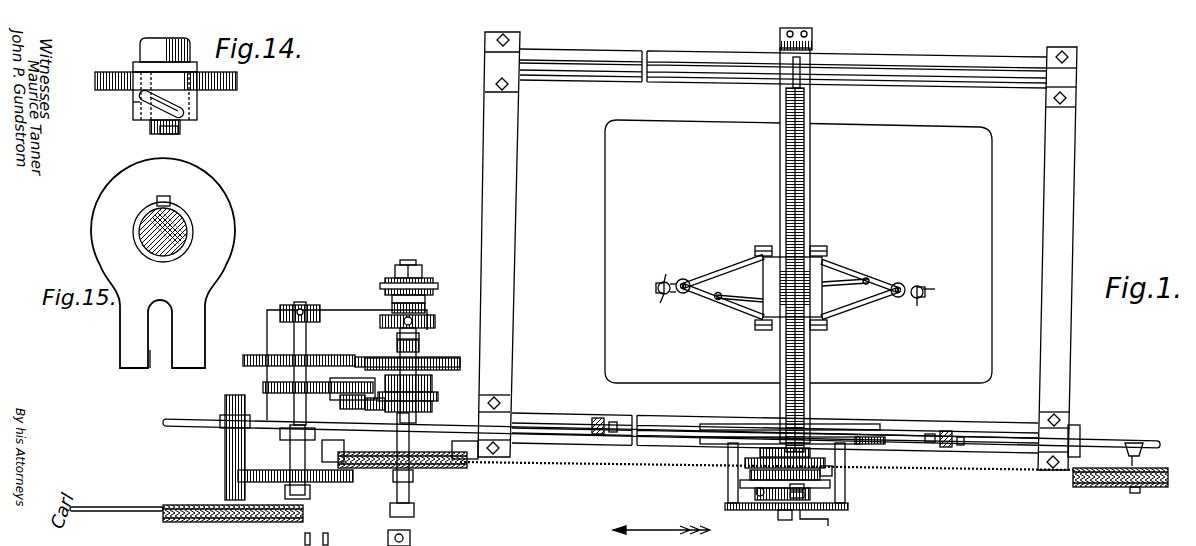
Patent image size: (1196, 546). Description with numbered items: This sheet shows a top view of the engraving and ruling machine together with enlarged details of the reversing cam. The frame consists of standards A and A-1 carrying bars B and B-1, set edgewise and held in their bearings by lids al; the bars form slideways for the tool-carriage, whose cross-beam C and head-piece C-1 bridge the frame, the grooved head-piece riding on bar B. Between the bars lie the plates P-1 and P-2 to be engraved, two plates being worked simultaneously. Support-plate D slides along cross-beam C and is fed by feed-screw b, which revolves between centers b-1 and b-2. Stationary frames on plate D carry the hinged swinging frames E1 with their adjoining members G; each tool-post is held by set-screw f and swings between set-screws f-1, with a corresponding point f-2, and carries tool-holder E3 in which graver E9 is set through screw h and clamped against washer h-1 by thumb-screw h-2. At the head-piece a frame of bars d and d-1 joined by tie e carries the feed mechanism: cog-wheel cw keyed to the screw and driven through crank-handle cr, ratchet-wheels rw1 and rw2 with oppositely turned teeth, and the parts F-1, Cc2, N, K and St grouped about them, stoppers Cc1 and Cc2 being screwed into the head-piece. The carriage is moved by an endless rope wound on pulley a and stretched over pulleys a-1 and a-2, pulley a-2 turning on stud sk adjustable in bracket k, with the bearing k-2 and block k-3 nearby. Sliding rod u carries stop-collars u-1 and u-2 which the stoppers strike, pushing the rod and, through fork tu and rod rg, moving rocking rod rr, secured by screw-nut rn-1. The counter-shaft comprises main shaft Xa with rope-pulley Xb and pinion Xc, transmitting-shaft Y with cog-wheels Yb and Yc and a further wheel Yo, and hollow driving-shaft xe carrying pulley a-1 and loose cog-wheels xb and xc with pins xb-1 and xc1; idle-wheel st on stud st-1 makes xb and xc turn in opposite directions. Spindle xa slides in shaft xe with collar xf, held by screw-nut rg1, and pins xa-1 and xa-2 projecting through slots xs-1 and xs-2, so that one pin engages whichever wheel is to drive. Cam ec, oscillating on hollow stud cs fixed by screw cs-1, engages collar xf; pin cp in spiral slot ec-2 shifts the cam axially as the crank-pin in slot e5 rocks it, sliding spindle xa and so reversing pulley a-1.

In FIG. 14, the pin cp is at (190, 103).
In FIG. 15, the pin cp is at (168, 197).
In FIG. 14, the cam ec is at (237, 82).
In FIG. 15, the cam ec is at (214, 204).
In FIG. 1, the cam ec is at (385, 286).
In FIG. 14, the spiral slot ec-2 is at (147, 101).
In FIG. 1, the spiral slot ec-2 is at (392, 300).
In FIG. 14, the hollow stud cs is at (146, 122).
In FIG. 15, the hollow stud cs is at (172, 254).
In FIG. 14, the screw cs-1 is at (178, 131).
In FIG. 15, the screw cs-1 is at (186, 232).
In FIG. 15, the slot e5 is at (152, 355).
In FIG. 1, the standard A is at (485, 230).
In FIG. 1, the standard A-1 is at (1072, 222).
In FIG. 1, the lids al is at (485, 88).
In FIG. 1, the bar B-1 is at (914, 82).
In FIG. 1, the bar B is at (905, 422).
In FIG. 1, the left plate P-1 is at (692, 251).
In FIG. 1, the right plate P-2 is at (901, 254).
In FIG. 1, the cross-beam C is at (806, 355).
In FIG. 1, the feed-screw b is at (801, 214).
In FIG. 1, the center b-2 is at (812, 40).
In FIG. 1, the center b-1 is at (786, 520).
In FIG. 1, the support-plate D is at (792, 287).
In FIG. 1, the swinging frame E1 is at (728, 270).
In FIG. 1, the lower link arms G is at (728, 308).
In FIG. 1, the set-screw f is at (683, 294).
In FIG. 1, the set-screws f-1 is at (820, 247).
In FIG. 1, the link pivot f-2 is at (762, 246).
In FIG. 1, the tool-holder E3 is at (657, 288).
In FIG. 1, the graver E9 is at (656, 292).
In FIG. 1, the screw h is at (795, 290).
In FIG. 1, the washer h-1 is at (928, 289).
In FIG. 1, the thumb-screw h-2 is at (661, 300).
In FIG. 1, the sliding rod u is at (978, 436).
In FIG. 1, the stop-collar u-1 is at (598, 418).
In FIG. 1, the stop-collar u-2 is at (947, 431).
In FIG. 1, the shaft bearing k-2 is at (1080, 432).
In FIG. 1, the bracket k is at (1146, 452).
In FIG. 1, the grooved pulley a-2 is at (1098, 482).
In FIG. 1, the stud sk is at (1136, 493).
In FIG. 1, the grooved pulley a-1 is at (448, 470).
In FIG. 1, the bar d-1 is at (728, 490).
In FIG. 1, the bar d is at (845, 490).
In FIG. 1, the tie e is at (748, 510).
In FIG. 1, the feed gear F-1 is at (760, 446).
In FIG. 1, the stopper Cc2 is at (745, 462).
In FIG. 1, the gear N is at (750, 473).
In FIG. 1, the gear plate K is at (742, 480).
In FIG. 1, the grooved pulley a is at (749, 490).
In FIG. 1, the cog-wheel cw is at (778, 497).
In FIG. 1, the ratchet-wheel rw2 is at (808, 485).
In FIG. 1, the ratchet-wheel rw1 is at (808, 495).
In FIG. 1, the stop St is at (832, 474).
In FIG. 1, the head-piece C-1 is at (835, 424).
In FIG. 1, the stopper Cc1 is at (866, 446).
In FIG. 1, the crank-handle cr is at (830, 522).
In FIG. 1, the transmitting-shaft Y is at (290, 330).
In FIG. 1, the cog-wheel Yc is at (243, 360).
In FIG. 1, the cog-wheel xc is at (374, 357).
In FIG. 1, the cog-wheel Yb is at (263, 388).
In FIG. 1, the stud st-1 is at (342, 396).
In FIG. 1, the pin xb-1 is at (382, 405).
In FIG. 1, the idle-wheel st is at (350, 410).
In FIG. 1, the screw-nut rg1 is at (408, 263).
In FIG. 1, the collar xf is at (418, 278).
In FIG. 1, the spindle xa is at (426, 305).
In FIG. 1, the driving-shaft xe is at (435, 322).
In FIG. 1, the pin xa-1 is at (393, 343).
In FIG. 1, the slot xs-1 is at (419, 346).
In FIG. 1, the pin xc1 is at (440, 358).
In FIG. 1, the cog-wheel xb is at (417, 377).
In FIG. 1, the slot xs-2 is at (436, 394).
In FIG. 1, the pin xa-2 is at (416, 407).
In FIG. 1, the bearing block k-3 is at (455, 446).
In FIG. 1, the main shaft Xa is at (225, 455).
In FIG. 1, the pinion Xc is at (238, 476).
In FIG. 1, the shaft Yo is at (292, 470).
In FIG. 1, the rod rg is at (409, 470).
In FIG. 1, the rocking rod rr is at (397, 480).
In FIG. 1, the screw-nut rn-1 is at (390, 510).
In FIG. 1, the rope-pulley Xb is at (275, 522).
In FIG. 1, the fork tu is at (410, 540).